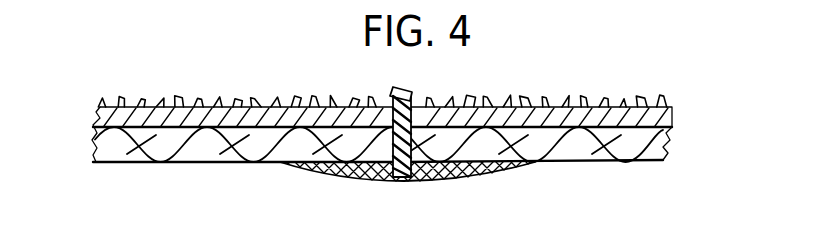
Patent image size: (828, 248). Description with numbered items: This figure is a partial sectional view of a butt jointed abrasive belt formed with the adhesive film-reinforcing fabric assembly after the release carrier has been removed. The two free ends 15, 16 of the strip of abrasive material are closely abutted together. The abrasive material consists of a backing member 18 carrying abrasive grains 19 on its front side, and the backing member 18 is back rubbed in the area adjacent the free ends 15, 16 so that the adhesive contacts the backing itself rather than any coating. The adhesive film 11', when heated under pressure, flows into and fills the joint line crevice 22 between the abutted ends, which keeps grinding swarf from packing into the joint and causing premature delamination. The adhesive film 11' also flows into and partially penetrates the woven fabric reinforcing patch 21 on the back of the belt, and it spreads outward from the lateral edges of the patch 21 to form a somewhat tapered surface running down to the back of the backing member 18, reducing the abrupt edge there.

The abrasive grains 19 is at (97, 125).
The adhesive film 11' is at (382, 87).
The joint line crevice 22 is at (402, 90).
The backing member 18 is at (143, 150).
The free end 15 is at (284, 163).
The free end 16 is at (539, 163).
The woven fabric reinforcing patch 21 is at (338, 181).